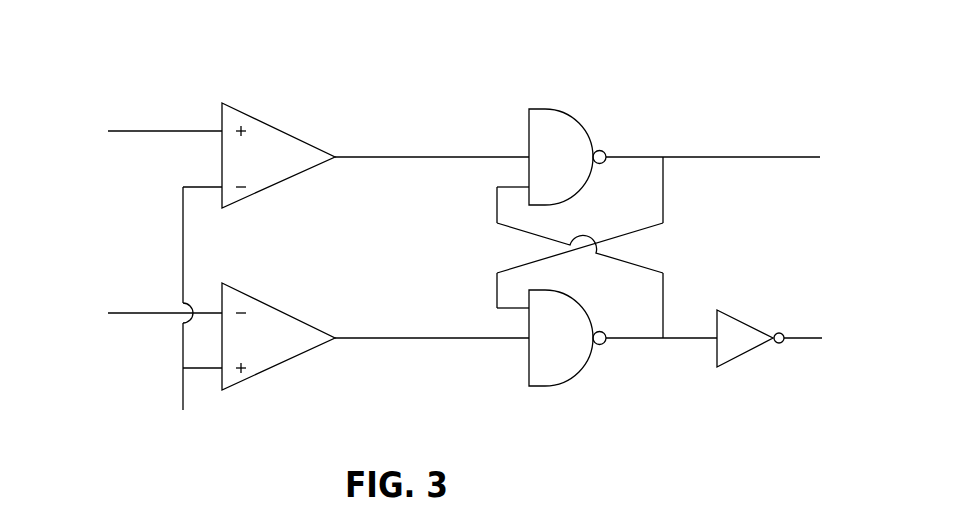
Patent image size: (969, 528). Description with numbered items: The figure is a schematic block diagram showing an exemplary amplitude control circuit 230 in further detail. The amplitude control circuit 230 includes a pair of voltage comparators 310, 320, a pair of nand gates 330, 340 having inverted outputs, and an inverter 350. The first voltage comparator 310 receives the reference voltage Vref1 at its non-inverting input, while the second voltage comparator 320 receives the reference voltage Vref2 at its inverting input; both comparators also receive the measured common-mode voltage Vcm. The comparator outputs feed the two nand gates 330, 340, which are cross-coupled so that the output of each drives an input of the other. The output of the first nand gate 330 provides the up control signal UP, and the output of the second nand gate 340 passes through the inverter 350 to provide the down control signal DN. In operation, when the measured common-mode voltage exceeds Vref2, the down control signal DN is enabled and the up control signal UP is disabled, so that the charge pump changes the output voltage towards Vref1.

The amplitude control circuit 230 is at (680, 75).
The voltage comparator 310 is at (276, 128).
The voltage comparator 320 is at (276, 309).
The nand gate 330 is at (541, 108).
The nand gate 340 is at (537, 387).
The inverter 350 is at (747, 324).